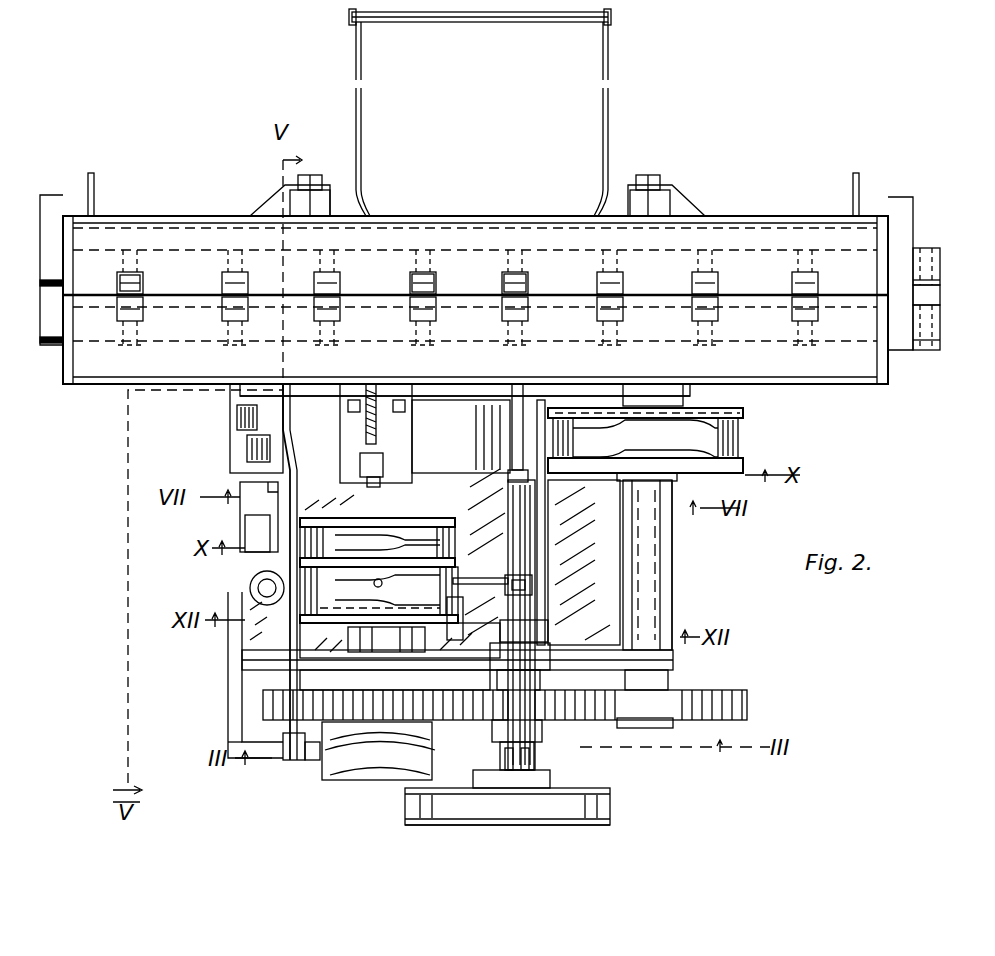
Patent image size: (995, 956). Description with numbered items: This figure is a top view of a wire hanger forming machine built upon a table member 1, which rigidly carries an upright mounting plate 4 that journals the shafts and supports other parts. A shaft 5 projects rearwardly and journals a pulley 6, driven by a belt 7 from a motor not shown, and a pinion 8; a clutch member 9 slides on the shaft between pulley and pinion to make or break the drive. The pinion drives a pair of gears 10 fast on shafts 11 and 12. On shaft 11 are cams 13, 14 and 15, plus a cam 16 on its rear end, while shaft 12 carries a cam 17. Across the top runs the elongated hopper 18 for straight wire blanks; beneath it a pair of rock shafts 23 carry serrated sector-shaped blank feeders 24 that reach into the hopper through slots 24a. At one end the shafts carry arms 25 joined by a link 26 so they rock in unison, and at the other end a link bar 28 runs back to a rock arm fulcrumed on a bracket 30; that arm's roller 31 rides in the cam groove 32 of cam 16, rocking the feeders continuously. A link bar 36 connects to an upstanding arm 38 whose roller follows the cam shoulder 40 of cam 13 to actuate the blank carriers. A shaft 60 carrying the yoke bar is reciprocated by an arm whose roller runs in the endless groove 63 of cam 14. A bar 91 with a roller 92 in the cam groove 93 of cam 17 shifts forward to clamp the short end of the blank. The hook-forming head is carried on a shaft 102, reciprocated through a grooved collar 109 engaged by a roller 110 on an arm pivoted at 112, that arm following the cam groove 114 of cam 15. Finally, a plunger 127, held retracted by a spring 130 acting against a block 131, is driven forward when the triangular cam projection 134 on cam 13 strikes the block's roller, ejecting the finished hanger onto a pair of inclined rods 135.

The table member 1 is at (674, 545).
The upright mounting plate 4 is at (668, 660).
The shaft 5 is at (535, 690).
The pulley 6 is at (600, 826).
The belt 7 is at (612, 802).
The pinion 8 is at (542, 725).
The clutch member 9 is at (534, 745).
The gears 10 is at (282, 705).
The shaft 11 is at (380, 690).
The shaft 12 is at (668, 580).
The cam 13 is at (237, 420).
The cam 14 is at (315, 520).
The cam 15 is at (476, 554).
The cam 16 is at (360, 768).
The cam 17 is at (743, 420).
The hopper 18 is at (797, 216).
The rock shafts 23 is at (165, 255).
The blank feeders 24 is at (712, 285).
The slots 24a is at (425, 285).
The arms 25 is at (940, 265).
The link 26 is at (920, 296).
The link bar 28 is at (262, 442).
The bracket 30 is at (270, 758).
The roller 31 is at (322, 760).
The cam groove 32 is at (385, 755).
The link bar 36 is at (522, 410).
The upstanding arm 38 is at (545, 440).
The cam shoulder 40 is at (461, 436).
The shaft 60 is at (400, 640).
The endless groove 63 is at (377, 547).
The bar 91 is at (550, 525).
The roller 92 is at (565, 442).
The cam groove 93 is at (645, 445).
The shaft 102 is at (525, 628).
The grooved collar 109 is at (532, 578).
The roller 110 is at (541, 568).
The pivot 112 is at (250, 588).
The cam groove 114 is at (379, 595).
The plunger 127 is at (395, 395).
The spring 130 is at (381, 433).
The block 131 is at (392, 469).
The triangular cam projection 134 is at (272, 470).
The rods 135 is at (362, 60).